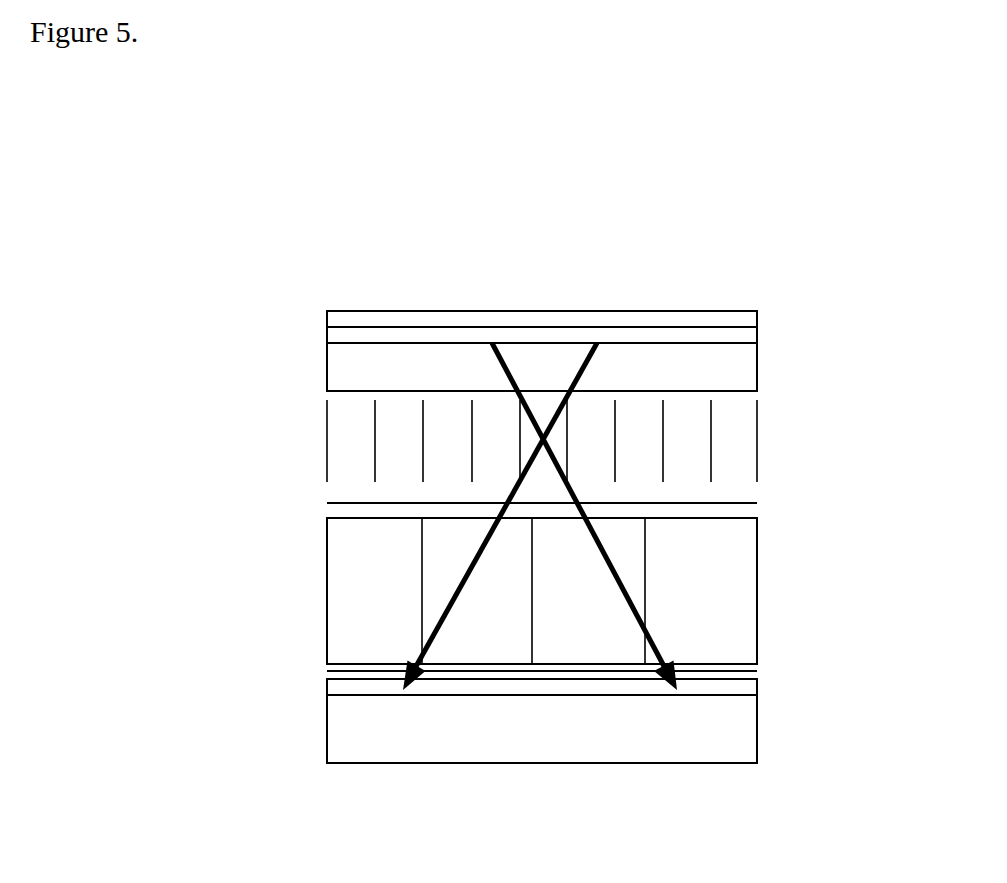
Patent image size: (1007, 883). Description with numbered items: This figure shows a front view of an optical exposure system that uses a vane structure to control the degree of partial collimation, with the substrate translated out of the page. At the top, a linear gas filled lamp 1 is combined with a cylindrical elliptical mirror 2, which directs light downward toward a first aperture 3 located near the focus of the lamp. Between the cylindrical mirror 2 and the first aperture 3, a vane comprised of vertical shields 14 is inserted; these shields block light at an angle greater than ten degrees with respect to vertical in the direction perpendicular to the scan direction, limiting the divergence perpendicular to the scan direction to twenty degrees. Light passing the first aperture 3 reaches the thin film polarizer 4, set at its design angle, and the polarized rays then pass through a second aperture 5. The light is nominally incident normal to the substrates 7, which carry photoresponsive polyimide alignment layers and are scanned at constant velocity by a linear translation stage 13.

The linear gas filled lamp 1 is at (370, 327).
The cylindrical elliptical mirror 2 is at (616, 313).
The first aperture 3 is at (757, 504).
The thin film polarizer 4 is at (337, 596).
The second aperture 5 is at (752, 671).
The substrates 7 is at (335, 687).
The linear translation stage 13 is at (335, 716).
The vertical shields 14 is at (333, 447).